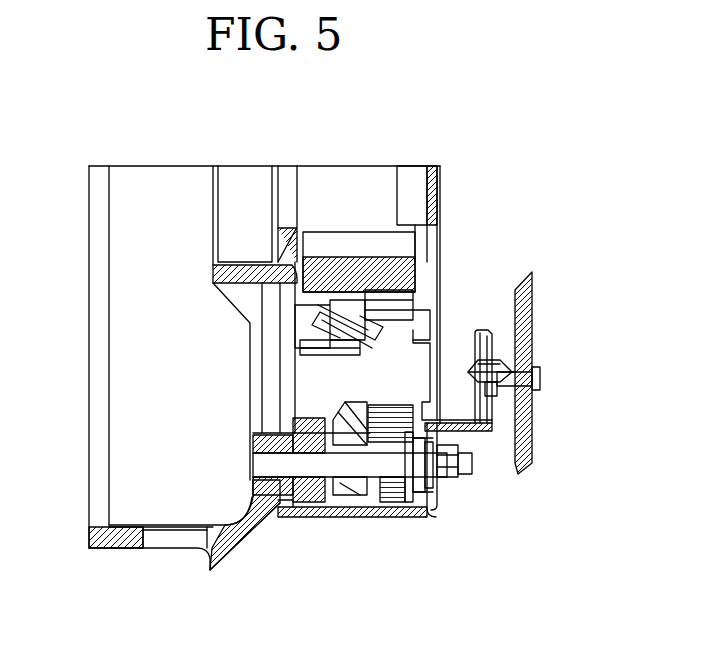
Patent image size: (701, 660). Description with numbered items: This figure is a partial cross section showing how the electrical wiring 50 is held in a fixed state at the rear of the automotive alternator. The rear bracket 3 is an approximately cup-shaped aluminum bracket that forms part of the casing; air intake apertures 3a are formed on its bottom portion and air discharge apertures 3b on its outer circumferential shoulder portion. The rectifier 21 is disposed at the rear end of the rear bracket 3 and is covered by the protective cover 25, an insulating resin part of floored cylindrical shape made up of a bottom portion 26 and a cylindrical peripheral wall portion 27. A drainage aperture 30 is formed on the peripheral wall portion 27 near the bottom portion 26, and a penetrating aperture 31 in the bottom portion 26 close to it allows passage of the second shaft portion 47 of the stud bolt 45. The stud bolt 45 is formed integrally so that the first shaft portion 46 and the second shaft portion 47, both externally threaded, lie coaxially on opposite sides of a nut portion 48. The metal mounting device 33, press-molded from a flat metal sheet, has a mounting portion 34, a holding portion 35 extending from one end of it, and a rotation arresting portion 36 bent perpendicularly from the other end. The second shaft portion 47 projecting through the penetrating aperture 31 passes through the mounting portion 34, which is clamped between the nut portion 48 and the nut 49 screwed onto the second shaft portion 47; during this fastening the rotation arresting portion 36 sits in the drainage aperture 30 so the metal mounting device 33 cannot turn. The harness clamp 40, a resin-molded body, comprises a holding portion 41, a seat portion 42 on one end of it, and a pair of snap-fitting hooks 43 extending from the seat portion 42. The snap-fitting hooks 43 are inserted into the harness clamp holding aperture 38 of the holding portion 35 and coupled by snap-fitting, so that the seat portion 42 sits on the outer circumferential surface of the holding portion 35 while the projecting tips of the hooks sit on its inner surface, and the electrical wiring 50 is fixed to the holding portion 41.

The rear bracket 3 is at (110, 550).
The air intake apertures 3a is at (258, 372).
The air discharge apertures 3b is at (173, 547).
The rectifier 21 is at (345, 517).
The protective cover 25 is at (447, 233).
The bottom portion 26 is at (443, 199).
The peripheral wall portion 27 is at (323, 517).
The drainage aperture 30 is at (397, 518).
The penetrating aperture 31 is at (435, 456).
The metal mounting device 33 is at (495, 427).
The mounting portion 34 is at (432, 497).
The holding portion 35 is at (490, 328).
The rotation arresting portion 36 is at (438, 505).
The harness clamp holding aperture 38 is at (497, 392).
The harness clamp 40 is at (543, 378).
The holding portion 41 is at (541, 392).
The seat portion 42 is at (506, 368).
The snap-fitting hooks 43 is at (490, 366).
The stud bolt 45 is at (474, 464).
The first shaft portion 46 is at (302, 465).
The second shaft portion 47 is at (463, 478).
The nut portion 48 is at (446, 486).
The nut 49 is at (440, 446).
The electrical wiring 50 is at (530, 307).